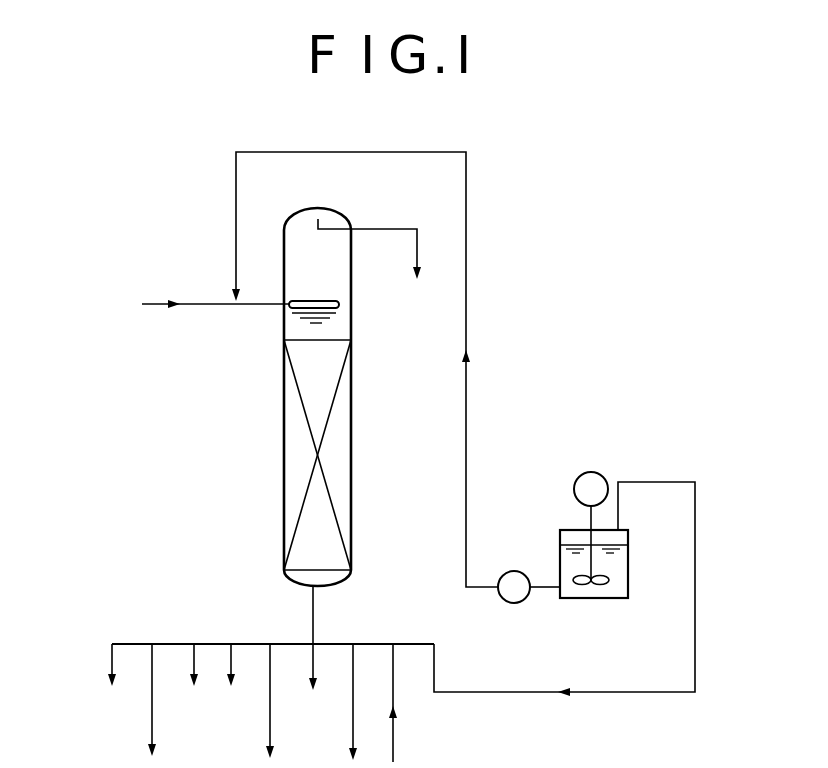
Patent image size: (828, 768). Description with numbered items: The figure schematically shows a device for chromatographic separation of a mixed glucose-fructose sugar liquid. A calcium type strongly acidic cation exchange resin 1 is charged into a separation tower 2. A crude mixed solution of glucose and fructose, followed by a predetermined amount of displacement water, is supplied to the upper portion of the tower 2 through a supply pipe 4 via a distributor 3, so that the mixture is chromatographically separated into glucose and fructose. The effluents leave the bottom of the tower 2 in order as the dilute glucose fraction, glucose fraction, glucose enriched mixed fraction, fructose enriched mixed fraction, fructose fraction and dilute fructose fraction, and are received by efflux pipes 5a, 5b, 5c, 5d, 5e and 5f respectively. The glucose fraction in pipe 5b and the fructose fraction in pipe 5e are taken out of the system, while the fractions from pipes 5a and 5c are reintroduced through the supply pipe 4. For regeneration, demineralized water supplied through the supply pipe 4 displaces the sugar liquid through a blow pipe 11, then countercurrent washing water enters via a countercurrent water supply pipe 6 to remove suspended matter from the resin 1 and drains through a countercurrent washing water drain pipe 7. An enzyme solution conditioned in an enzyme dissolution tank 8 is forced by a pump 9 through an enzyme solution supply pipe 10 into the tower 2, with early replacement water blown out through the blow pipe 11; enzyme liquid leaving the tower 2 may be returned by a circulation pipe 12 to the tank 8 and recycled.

The calcium type strongly acidic cation exchange resin 1 is at (343, 445).
The separation tower 2 is at (352, 322).
The distributor 3 is at (312, 300).
The supply pipe 4 is at (200, 305).
The efflux pipe 5a is at (108, 664).
The efflux pipe 5b is at (150, 664).
The efflux pipe 5c is at (192, 664).
The efflux pipe 5d is at (229, 664).
The efflux pipe 5e is at (268, 666).
The efflux pipe 5f is at (311, 664).
The countercurrent water supply pipe 6 is at (395, 690).
The countercurrent washing water drain pipe 7 is at (382, 228).
The enzyme dissolution tank 8 is at (628, 572).
The pump 9 is at (514, 603).
The enzyme solution supply pipe 10 is at (466, 442).
The blow pipe 11 is at (354, 690).
The circulation pipe 12 is at (613, 695).